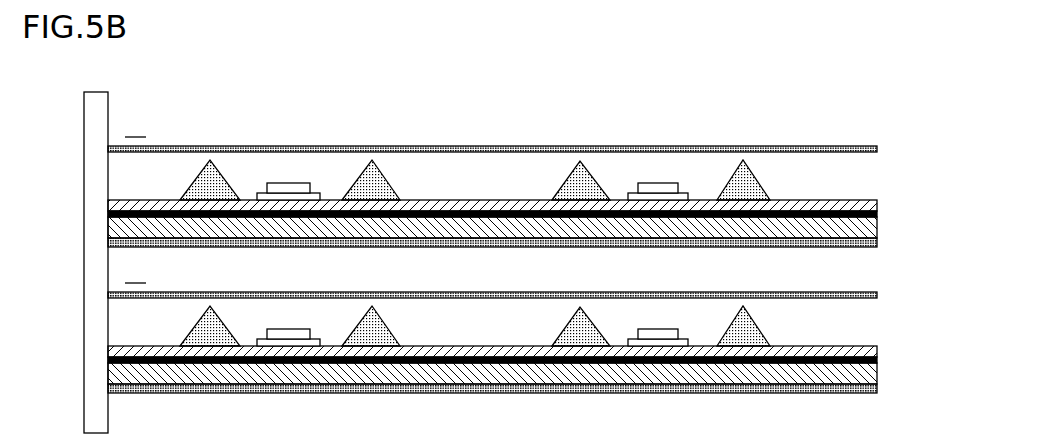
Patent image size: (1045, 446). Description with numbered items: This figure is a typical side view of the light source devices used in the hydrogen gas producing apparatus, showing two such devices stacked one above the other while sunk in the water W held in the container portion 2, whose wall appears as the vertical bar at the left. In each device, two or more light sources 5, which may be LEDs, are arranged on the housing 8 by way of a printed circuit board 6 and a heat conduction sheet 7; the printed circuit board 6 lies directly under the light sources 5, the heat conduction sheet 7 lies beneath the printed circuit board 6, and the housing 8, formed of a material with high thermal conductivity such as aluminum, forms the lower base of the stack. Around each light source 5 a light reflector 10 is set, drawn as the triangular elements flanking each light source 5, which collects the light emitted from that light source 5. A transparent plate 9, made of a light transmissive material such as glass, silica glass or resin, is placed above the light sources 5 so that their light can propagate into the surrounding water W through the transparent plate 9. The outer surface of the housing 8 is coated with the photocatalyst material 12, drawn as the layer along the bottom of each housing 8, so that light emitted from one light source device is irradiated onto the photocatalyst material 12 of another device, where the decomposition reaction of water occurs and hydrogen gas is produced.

The container portion 2 is at (84, 144).
The water W is at (135, 200).
The light source 5 is at (309, 184).
The printed circuit board 6 is at (877, 201).
The heat conduction sheet 7 is at (877, 214).
The housing 8 is at (877, 228).
The transparent plate 9 is at (877, 149).
The light reflector 10 is at (361, 169).
The photocatalyst material 12 is at (852, 247).